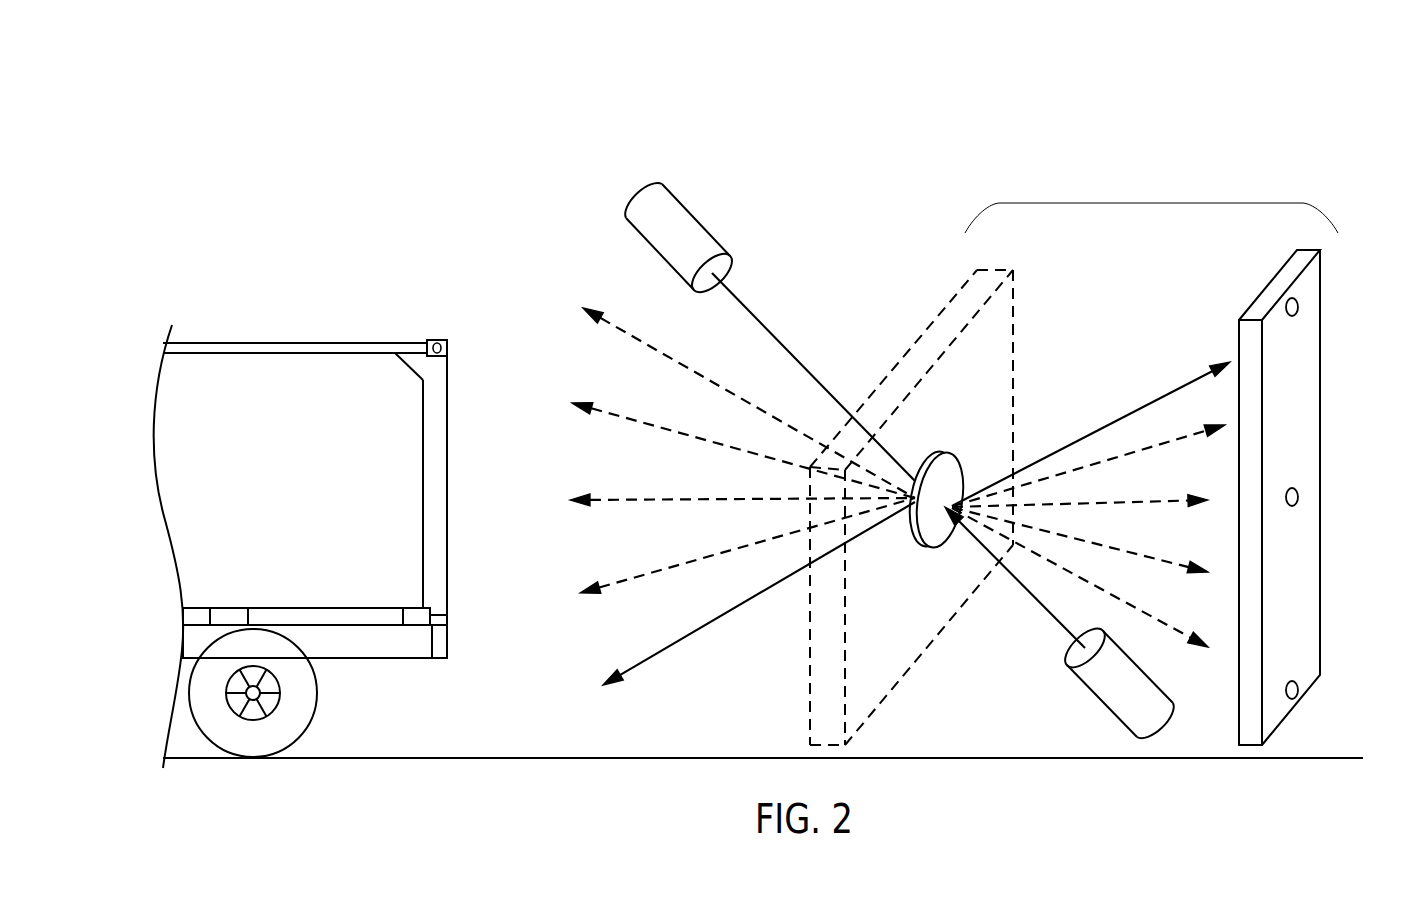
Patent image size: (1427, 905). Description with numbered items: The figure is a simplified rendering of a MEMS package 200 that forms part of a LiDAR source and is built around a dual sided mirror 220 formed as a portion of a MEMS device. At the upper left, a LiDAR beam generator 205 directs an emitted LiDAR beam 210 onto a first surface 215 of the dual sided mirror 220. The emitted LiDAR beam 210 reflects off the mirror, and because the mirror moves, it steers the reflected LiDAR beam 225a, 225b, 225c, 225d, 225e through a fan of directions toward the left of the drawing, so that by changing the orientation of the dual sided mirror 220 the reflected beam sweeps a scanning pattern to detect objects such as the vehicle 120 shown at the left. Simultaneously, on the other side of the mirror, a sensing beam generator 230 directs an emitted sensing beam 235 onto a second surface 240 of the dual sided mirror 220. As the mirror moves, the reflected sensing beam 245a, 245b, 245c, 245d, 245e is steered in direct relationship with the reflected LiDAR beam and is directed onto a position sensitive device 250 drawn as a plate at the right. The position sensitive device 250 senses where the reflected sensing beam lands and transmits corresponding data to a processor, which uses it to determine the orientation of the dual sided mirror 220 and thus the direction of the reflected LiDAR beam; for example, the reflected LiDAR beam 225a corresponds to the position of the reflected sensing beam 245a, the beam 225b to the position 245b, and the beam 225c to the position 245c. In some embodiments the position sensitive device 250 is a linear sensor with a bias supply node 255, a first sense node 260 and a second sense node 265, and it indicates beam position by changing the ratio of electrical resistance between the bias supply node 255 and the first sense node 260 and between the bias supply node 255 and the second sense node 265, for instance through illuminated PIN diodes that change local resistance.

The vehicle 120 is at (437, 340).
The MEMS package 200 is at (1152, 203).
The LiDAR beam generator 205 is at (648, 200).
The emitted LiDAR beam 210 is at (788, 356).
The first surface 215 is at (927, 463).
The dual sided mirror 220 is at (947, 452).
The reflected LiDAR beam 225a is at (703, 628).
The reflected LiDAR beam 225b is at (618, 583).
The reflected LiDAR beam 225c is at (607, 497).
The reflected LiDAR beam 225d is at (615, 412).
The reflected LiDAR beam 225e is at (626, 330).
The sensing beam generator 230 is at (1105, 698).
The emitted sensing beam 235 is at (1043, 610).
The second surface 240 is at (958, 475).
The reflected sensing beam 245a is at (1170, 393).
The reflected sensing beam 245b is at (1192, 434).
The reflected sensing beam 245c is at (1162, 500).
The reflected sensing beam 245d is at (1182, 543).
The reflected sensing beam 245e is at (1180, 603).
The position sensitive device 250 is at (1295, 645).
The bias supply node 255 is at (1300, 497).
The first sense node 260 is at (1300, 308).
The second sense node 265 is at (1300, 695).